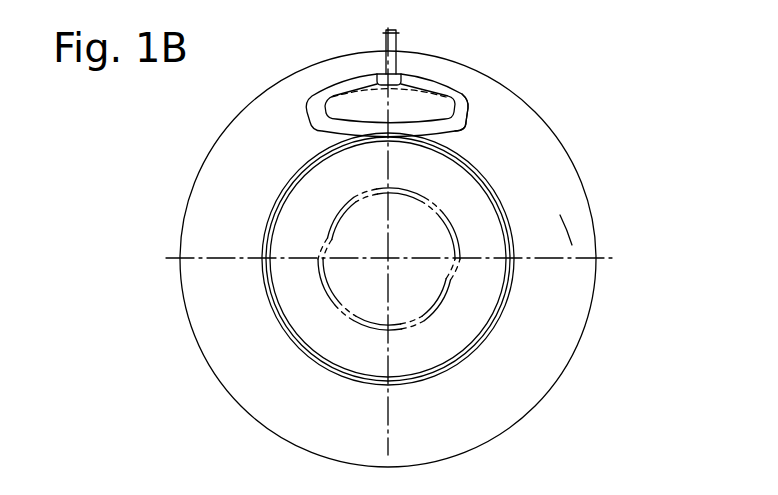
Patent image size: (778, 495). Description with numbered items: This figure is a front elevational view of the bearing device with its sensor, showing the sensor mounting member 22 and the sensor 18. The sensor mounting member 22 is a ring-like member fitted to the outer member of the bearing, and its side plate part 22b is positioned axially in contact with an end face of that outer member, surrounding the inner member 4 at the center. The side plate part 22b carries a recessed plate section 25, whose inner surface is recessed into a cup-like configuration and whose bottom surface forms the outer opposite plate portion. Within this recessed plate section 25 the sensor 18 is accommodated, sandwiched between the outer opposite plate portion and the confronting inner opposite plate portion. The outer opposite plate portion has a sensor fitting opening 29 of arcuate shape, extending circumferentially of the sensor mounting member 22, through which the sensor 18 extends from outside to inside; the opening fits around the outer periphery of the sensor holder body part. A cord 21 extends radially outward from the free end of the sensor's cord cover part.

The inner member 4 is at (305, 300).
The sensor 18 is at (358, 108).
The cord 21 is at (397, 35).
The sensor mounting member 22 is at (565, 132).
The side plate part 22b is at (573, 225).
The recessed plate section 25 is at (458, 97).
The sensor fitting opening 29 is at (313, 92).